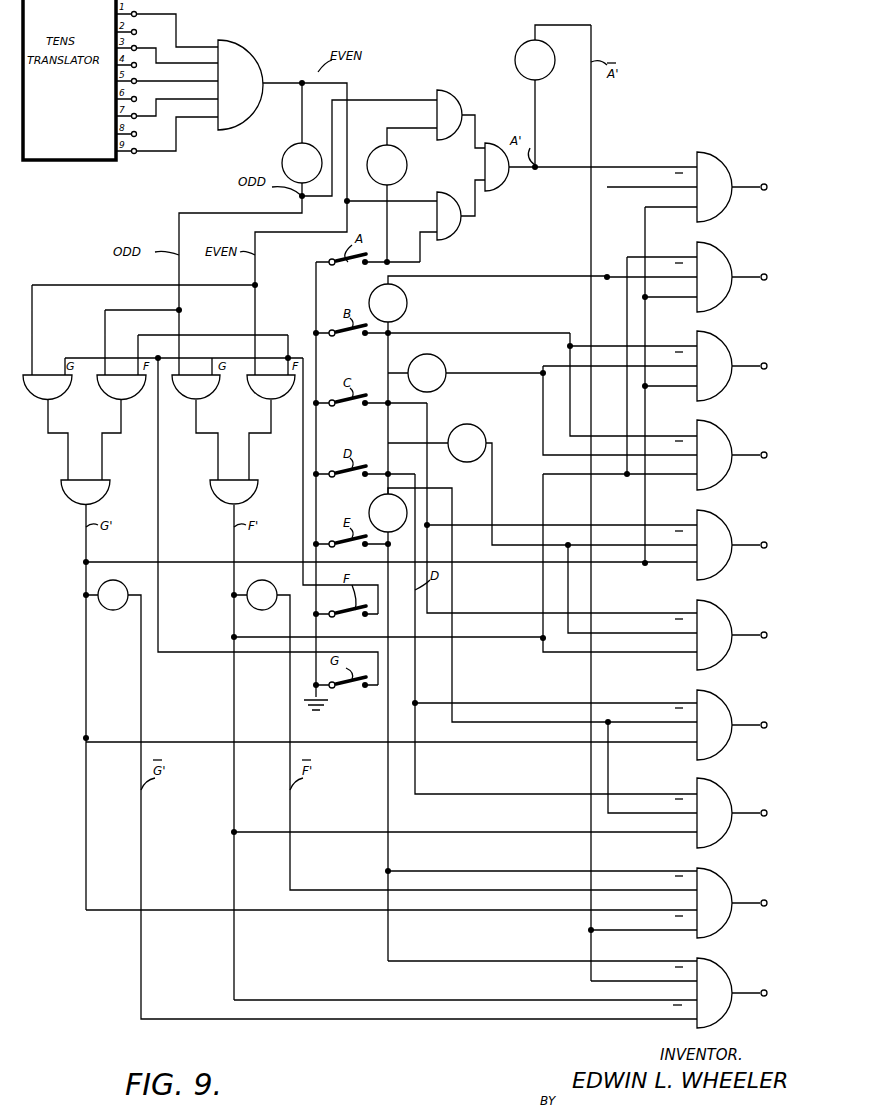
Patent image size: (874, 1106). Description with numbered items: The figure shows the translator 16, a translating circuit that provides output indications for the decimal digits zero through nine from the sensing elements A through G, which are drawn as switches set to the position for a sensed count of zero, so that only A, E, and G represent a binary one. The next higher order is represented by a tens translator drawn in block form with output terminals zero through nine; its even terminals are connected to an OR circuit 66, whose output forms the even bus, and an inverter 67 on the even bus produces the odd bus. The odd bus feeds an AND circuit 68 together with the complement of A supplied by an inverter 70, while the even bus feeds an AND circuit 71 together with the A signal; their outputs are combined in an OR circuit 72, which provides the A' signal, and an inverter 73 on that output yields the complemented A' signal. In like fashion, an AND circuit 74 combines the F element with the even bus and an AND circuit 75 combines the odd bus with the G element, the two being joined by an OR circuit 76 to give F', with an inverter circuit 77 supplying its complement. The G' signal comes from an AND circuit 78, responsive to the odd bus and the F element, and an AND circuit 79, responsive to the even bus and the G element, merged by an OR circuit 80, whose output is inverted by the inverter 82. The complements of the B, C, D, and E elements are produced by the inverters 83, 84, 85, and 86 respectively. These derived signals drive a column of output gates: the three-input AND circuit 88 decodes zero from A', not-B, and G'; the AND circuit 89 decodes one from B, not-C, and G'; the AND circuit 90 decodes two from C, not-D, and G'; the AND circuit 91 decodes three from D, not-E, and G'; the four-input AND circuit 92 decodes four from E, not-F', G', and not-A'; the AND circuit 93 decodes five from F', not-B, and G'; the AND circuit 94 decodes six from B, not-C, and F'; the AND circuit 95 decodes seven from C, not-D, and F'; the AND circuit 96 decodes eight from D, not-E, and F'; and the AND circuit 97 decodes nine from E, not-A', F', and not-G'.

The translator 16 is at (655, 56).
The OR circuit 66 is at (252, 52).
The inverter 67 is at (283, 162).
The AND circuit 68 is at (450, 90).
The inverter 70 is at (407, 162).
The AND circuit 71 is at (455, 238).
The OR circuit 72 is at (500, 185).
The inverter 73 is at (522, 48).
The AND circuit 74 is at (276, 405).
The AND circuit 75 is at (192, 405).
The OR circuit 76 is at (256, 490).
The inverter circuit 77 is at (271, 608).
The AND circuit 78 is at (125, 405).
The AND circuit 79 is at (44, 405).
The OR circuit 80 is at (108, 490).
The inverter 82 is at (122, 608).
The inverter 83 is at (407, 300).
The inverter 84 is at (440, 360).
The inverter 85 is at (480, 430).
The inverter 86 is at (369, 500).
The AND circuit 88 is at (720, 160).
The AND circuit 89 is at (720, 339).
The AND circuit 90 is at (720, 518).
The AND circuit 91 is at (720, 698).
The AND circuit 92 is at (720, 876).
The AND circuit 93 is at (720, 250).
The AND circuit 94 is at (720, 428).
The AND circuit 95 is at (720, 608).
The AND circuit 96 is at (720, 786).
The AND circuit 97 is at (720, 966).